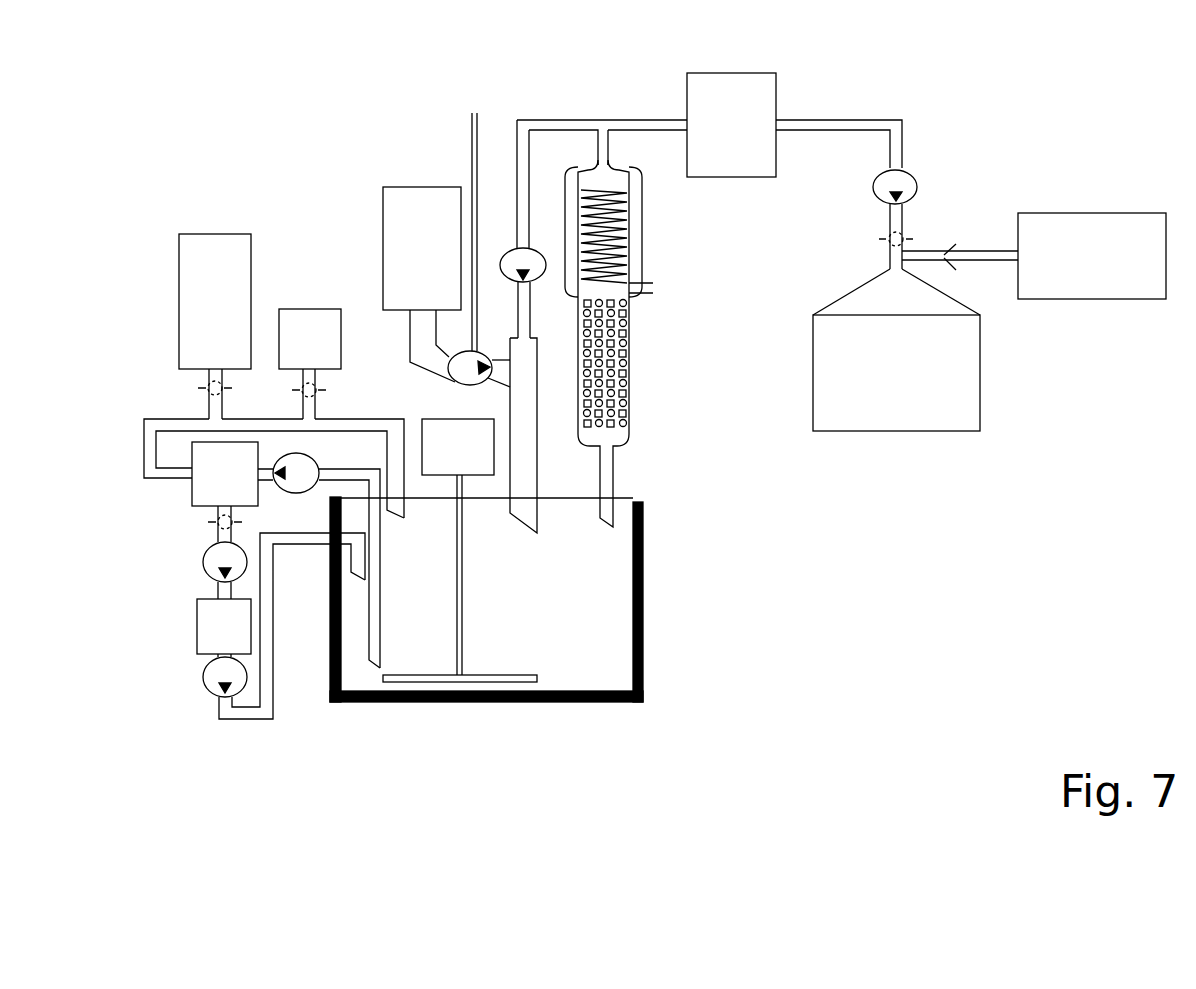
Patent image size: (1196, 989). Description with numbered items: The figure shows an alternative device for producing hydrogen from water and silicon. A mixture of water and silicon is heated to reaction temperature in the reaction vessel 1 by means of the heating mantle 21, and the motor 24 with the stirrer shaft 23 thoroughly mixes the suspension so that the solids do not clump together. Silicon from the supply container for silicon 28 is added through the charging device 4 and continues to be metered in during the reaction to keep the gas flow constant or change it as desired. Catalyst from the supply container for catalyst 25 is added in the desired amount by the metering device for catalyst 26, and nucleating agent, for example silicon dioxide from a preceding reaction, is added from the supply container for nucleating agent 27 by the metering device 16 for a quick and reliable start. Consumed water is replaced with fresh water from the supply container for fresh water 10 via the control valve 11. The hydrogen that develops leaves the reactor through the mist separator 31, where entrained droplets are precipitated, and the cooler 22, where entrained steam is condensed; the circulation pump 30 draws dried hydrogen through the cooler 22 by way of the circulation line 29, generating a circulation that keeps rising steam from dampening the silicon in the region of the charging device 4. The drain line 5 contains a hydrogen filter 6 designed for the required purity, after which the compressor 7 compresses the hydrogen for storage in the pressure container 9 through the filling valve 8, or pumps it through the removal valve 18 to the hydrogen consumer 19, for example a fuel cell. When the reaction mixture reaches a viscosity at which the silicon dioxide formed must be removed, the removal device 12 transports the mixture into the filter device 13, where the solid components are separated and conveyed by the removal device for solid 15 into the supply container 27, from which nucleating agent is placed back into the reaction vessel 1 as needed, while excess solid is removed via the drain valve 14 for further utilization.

The reaction vessel 1 is at (598, 680).
The charging device 4 is at (472, 113).
The drain line 5 is at (645, 118).
The hydrogen filter 6 is at (778, 97).
The pressure increase device 7 is at (912, 170).
The filling valve 8 is at (910, 233).
The pressure container 9 is at (952, 431).
The supply container for fresh water 10 is at (210, 232).
The control valve 11 is at (200, 386).
The removal device 12 is at (302, 497).
The filter device 13 is at (187, 502).
The drain valve 14 is at (213, 532).
The removal device for solid 15 is at (207, 568).
The metering device for nucleating agent 16 is at (208, 692).
The removal valve for hydrogen 18 is at (963, 248).
The hydrogen consumer 19 is at (1105, 299).
The heating mantle 21 is at (640, 657).
The cooler 22 is at (645, 298).
The stirrer shaft 23 is at (490, 682).
The motor 24 is at (440, 418).
The supply container for catalyst 25 is at (312, 306).
The metering device for catalyst 26 is at (297, 388).
The supply container for nucleating agent 27 is at (197, 655).
The supply container for silicon 28 is at (393, 185).
The circulation line 29 is at (548, 118).
The circulation pump 30 is at (510, 248).
The mist separator 31 is at (632, 395).